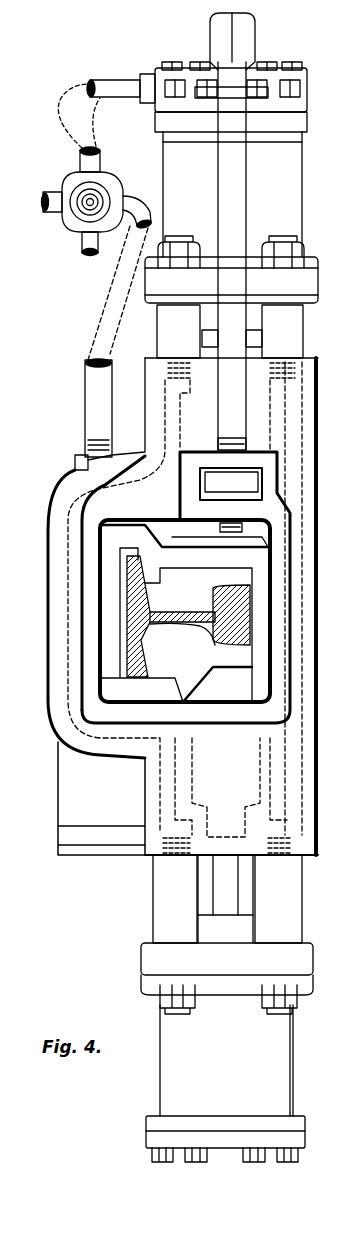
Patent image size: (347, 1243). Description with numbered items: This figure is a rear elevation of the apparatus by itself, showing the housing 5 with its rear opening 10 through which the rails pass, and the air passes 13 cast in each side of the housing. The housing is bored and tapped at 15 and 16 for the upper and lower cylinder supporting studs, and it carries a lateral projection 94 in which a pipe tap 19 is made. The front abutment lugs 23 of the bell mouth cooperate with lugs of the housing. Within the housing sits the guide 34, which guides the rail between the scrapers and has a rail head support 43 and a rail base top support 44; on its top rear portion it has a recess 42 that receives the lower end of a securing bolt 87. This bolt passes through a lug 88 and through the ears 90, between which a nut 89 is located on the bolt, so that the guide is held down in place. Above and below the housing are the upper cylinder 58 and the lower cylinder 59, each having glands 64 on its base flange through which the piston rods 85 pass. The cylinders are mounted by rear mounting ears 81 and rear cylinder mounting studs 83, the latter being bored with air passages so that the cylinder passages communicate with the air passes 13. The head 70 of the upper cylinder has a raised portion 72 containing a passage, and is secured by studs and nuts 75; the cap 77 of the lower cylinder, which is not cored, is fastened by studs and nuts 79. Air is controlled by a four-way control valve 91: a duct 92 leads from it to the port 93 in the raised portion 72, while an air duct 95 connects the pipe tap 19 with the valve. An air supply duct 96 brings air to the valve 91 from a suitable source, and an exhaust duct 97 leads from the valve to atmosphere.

The housing 5 is at (314, 703).
The rear opening 10 is at (274, 658).
The air passes 13 is at (172, 427).
The bore and tap for upper cylinder supporting stud 15 is at (168, 370).
The bore and tap for lower cylinder supporting stud 16 is at (164, 846).
The pipe tap 19 is at (84, 462).
The front abutment lugs 23 is at (333, 767).
The guide 34 is at (262, 625).
The recess 42 is at (232, 540).
The rail head support 43 is at (215, 646).
The rail base top support 44 is at (163, 580).
The upper cylinder 58 is at (232, 199).
The lower cylinder 59 is at (226, 1060).
The glands 64 is at (210, 924).
The head of the upper cylinder 70 is at (306, 68).
The raised portion 72 is at (296, 86).
The studs and nuts 75 is at (270, 66).
The cap for the lower cylinder 77 is at (305, 1140).
The studs and nuts 79 is at (250, 1165).
The rear mounting ears 81 is at (306, 958).
The rear cylinder mounting studs 83 is at (140, 902).
The piston rods 85 is at (232, 875).
The securing bolt 87 is at (244, 257).
The lug 88 is at (262, 100).
The nut 89 is at (231, 484).
The ears 90 is at (248, 458).
The four-way control valve 91 is at (108, 190).
The duct 92 is at (96, 147).
The port 93 is at (158, 70).
The lateral projection 94 is at (95, 486).
The air duct 95 is at (88, 383).
The air supply duct 96 is at (52, 214).
The exhaust duct 97 is at (82, 250).